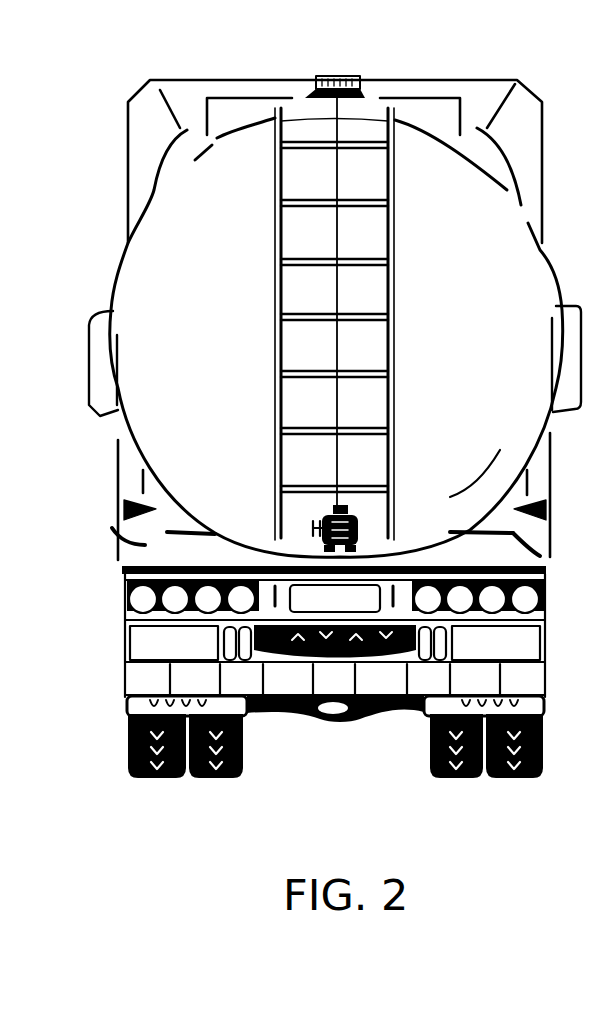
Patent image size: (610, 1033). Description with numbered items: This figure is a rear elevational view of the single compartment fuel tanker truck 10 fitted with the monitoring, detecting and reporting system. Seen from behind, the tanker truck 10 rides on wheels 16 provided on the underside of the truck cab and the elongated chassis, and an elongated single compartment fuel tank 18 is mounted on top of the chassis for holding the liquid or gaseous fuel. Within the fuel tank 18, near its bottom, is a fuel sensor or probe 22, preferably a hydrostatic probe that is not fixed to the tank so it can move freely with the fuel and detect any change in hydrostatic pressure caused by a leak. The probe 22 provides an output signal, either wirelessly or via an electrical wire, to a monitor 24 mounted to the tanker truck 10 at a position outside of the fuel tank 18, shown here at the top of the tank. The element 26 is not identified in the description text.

The fuel tanker truck 10 is at (290, 53).
The wheels 16 is at (423, 767).
The elongated single compartment fuel tank 18 is at (128, 240).
The fuel sensor or probe 22 is at (308, 528).
The monitor 24 is at (337, 77).
The ladder 26 is at (332, 343).